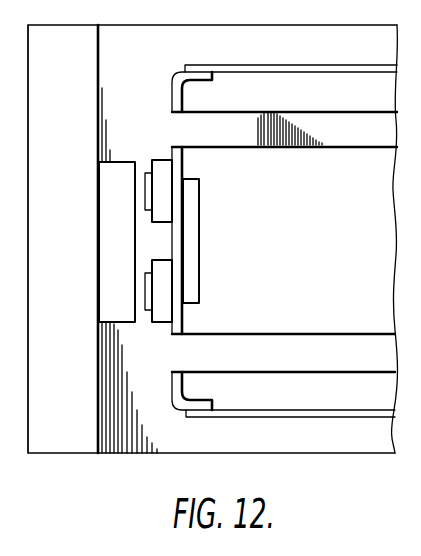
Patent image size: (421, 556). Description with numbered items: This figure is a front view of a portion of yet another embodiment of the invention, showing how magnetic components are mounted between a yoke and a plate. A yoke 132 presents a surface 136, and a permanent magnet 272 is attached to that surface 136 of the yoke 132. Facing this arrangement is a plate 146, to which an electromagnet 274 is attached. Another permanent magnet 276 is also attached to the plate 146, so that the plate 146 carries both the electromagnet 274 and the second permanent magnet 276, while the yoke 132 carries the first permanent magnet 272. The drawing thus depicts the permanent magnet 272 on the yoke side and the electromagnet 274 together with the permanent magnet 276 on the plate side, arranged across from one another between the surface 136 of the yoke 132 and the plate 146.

The yoke 132 is at (65, 427).
The surface 136 is at (100, 422).
The plate 146 is at (172, 80).
The permanent magnet 272 is at (117, 295).
The electromagnet 274 is at (157, 237).
The permanent magnet 276 is at (190, 212).